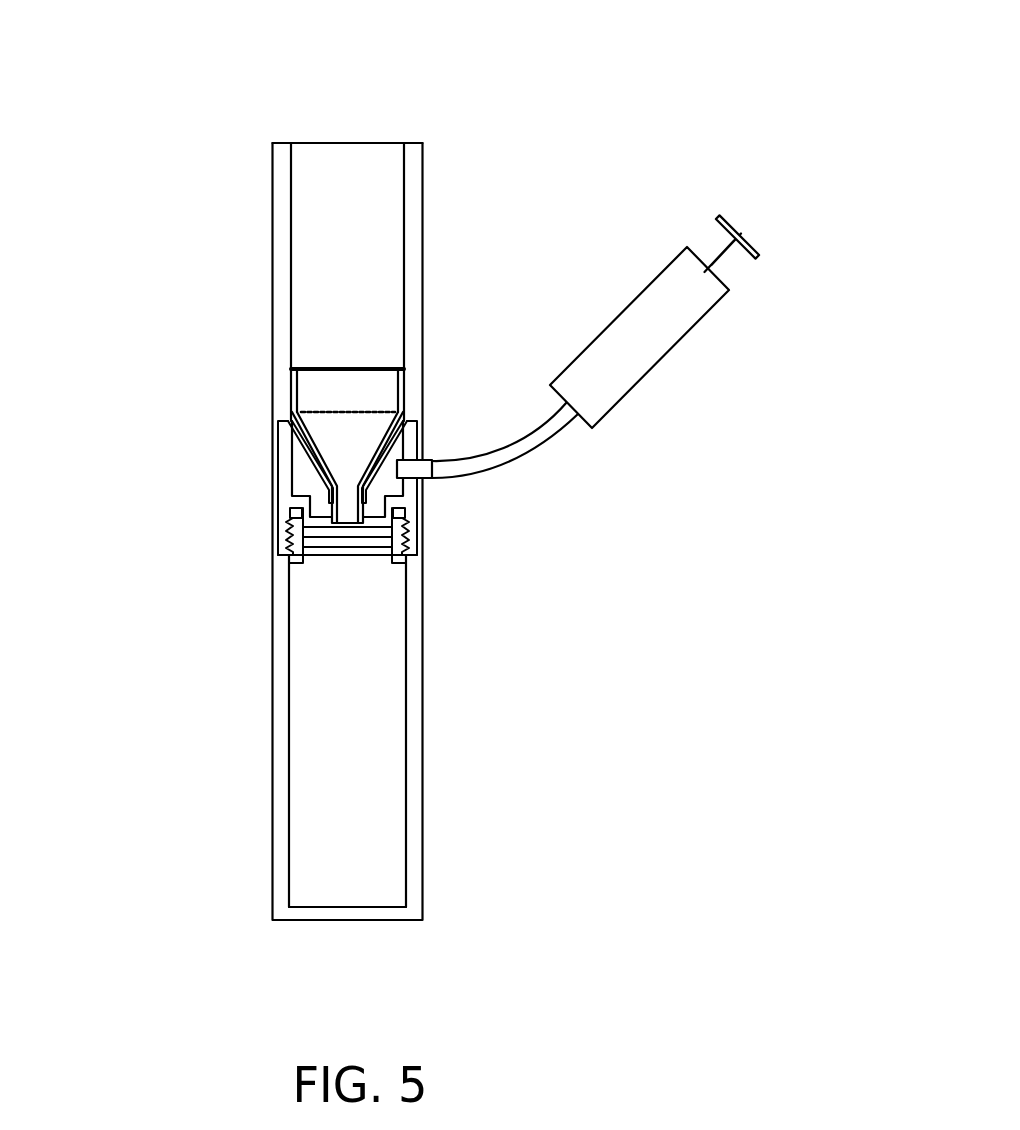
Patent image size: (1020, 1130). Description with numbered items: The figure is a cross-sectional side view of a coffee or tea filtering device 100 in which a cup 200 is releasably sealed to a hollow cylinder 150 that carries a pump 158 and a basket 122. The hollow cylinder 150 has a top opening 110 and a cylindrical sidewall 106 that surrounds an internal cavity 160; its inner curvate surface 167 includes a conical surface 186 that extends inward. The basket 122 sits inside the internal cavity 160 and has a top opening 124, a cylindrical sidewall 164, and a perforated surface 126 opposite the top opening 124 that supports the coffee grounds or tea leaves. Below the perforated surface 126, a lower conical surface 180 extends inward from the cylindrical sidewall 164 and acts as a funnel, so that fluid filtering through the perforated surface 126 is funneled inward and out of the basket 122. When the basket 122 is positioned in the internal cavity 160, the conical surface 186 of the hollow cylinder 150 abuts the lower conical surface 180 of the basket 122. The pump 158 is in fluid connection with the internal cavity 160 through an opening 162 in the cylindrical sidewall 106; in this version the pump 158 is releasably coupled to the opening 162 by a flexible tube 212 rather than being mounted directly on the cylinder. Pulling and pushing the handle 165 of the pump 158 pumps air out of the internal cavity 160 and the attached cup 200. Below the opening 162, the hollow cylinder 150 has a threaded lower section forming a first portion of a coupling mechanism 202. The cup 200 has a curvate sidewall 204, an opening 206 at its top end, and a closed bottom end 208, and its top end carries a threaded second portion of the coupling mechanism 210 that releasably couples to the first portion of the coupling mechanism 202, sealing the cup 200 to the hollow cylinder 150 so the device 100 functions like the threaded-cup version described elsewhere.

The coffee or tea filtering device 100 is at (121, 76).
The cylindrical sidewall 106 is at (417, 236).
The top opening 110 is at (364, 118).
The basket 122 is at (304, 363).
The top opening 124 is at (328, 349).
The perforated surface 126 is at (359, 411).
The hollow cylinder 150 is at (242, 220).
The pump 158 is at (718, 378).
The internal cavity 160 is at (330, 302).
The opening 162 is at (435, 488).
The cylindrical sidewall 164 is at (292, 393).
The handle 165 is at (741, 224).
The inner curvate surface 167 is at (292, 173).
The lower conical surface 180 is at (308, 465).
The conical surface 186 is at (312, 455).
The cup 200 is at (210, 724).
The first portion of a coupling mechanism 202 is at (270, 536).
The curvate sidewall 204 is at (417, 748).
The opening 206 is at (376, 551).
The closed bottom end 208 is at (337, 906).
The second portion of the coupling mechanism 210 is at (427, 535).
The flexible tube 212 is at (522, 448).